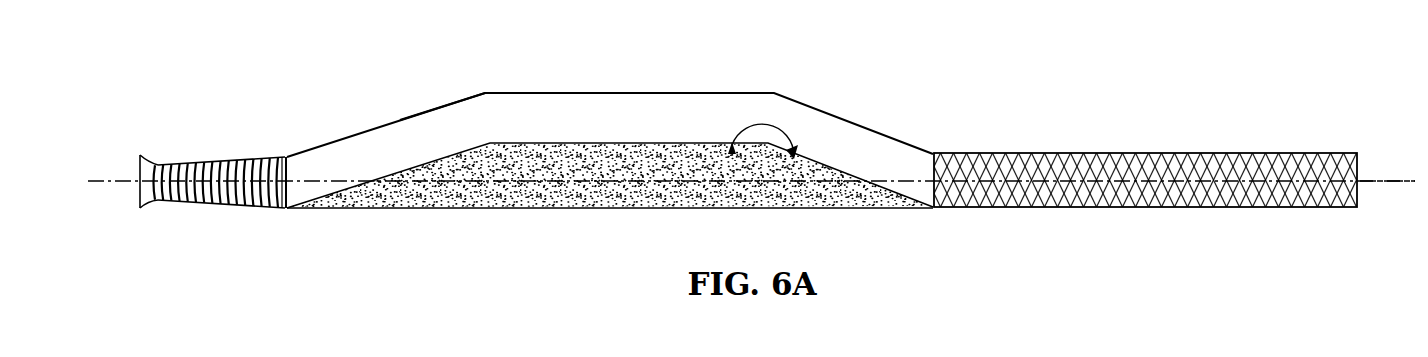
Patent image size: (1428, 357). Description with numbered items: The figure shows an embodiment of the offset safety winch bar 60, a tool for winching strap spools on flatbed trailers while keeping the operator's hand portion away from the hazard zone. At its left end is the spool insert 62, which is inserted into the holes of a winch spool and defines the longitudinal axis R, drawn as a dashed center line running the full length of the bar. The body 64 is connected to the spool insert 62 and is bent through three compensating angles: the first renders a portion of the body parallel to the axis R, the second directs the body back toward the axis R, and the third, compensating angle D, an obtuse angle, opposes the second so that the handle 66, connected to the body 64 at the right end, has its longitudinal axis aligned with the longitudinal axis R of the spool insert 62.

The offset safety winch bar 60 is at (641, 54).
The spool insert 62 is at (256, 165).
The body 64 is at (456, 115).
The handle 66 is at (1125, 165).
The longitudinal axis of the spool insert R is at (1380, 180).
The compensating angle D is at (763, 161).